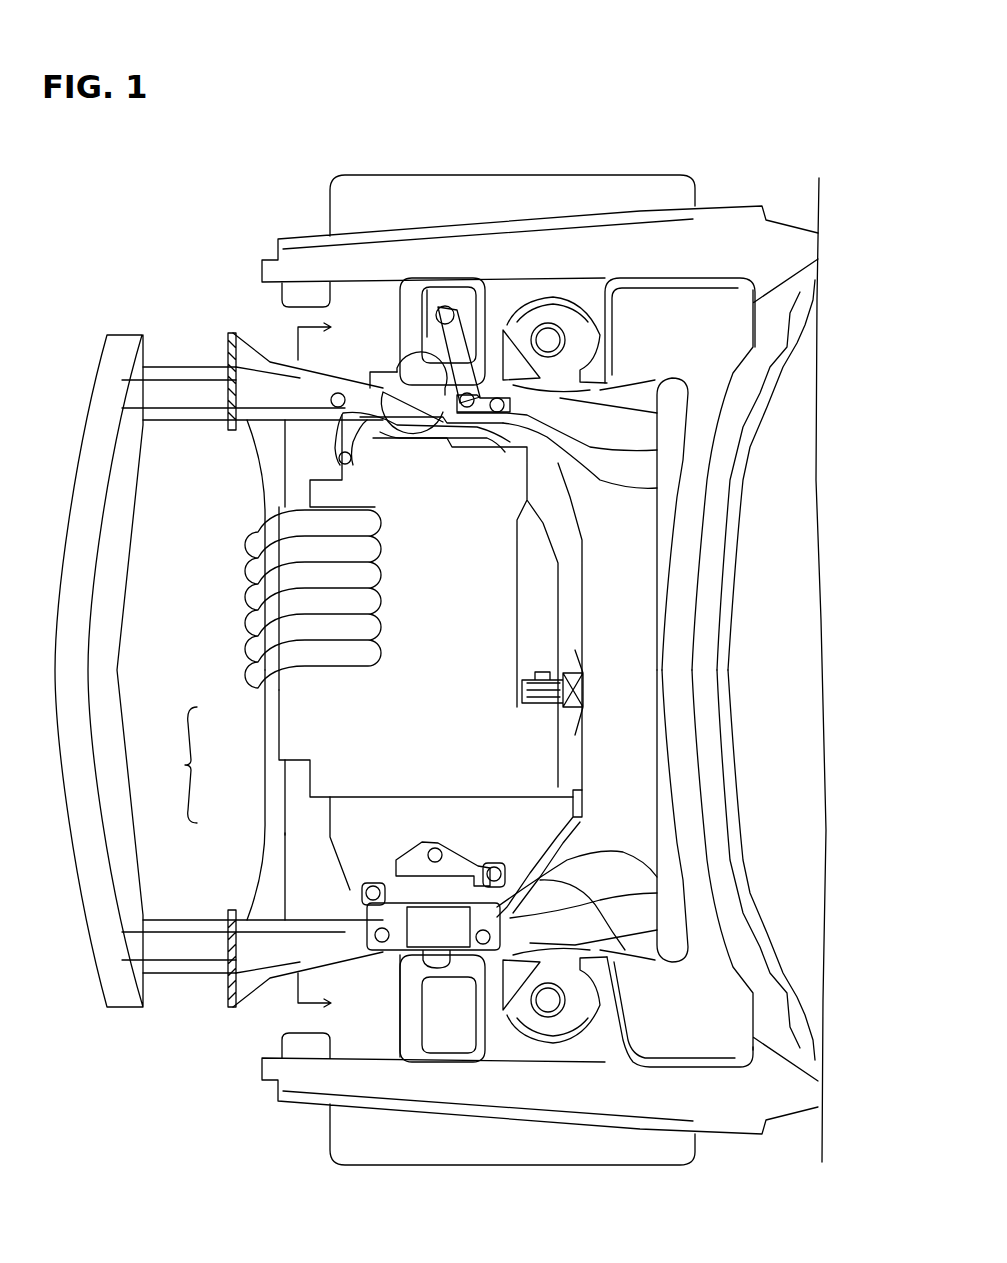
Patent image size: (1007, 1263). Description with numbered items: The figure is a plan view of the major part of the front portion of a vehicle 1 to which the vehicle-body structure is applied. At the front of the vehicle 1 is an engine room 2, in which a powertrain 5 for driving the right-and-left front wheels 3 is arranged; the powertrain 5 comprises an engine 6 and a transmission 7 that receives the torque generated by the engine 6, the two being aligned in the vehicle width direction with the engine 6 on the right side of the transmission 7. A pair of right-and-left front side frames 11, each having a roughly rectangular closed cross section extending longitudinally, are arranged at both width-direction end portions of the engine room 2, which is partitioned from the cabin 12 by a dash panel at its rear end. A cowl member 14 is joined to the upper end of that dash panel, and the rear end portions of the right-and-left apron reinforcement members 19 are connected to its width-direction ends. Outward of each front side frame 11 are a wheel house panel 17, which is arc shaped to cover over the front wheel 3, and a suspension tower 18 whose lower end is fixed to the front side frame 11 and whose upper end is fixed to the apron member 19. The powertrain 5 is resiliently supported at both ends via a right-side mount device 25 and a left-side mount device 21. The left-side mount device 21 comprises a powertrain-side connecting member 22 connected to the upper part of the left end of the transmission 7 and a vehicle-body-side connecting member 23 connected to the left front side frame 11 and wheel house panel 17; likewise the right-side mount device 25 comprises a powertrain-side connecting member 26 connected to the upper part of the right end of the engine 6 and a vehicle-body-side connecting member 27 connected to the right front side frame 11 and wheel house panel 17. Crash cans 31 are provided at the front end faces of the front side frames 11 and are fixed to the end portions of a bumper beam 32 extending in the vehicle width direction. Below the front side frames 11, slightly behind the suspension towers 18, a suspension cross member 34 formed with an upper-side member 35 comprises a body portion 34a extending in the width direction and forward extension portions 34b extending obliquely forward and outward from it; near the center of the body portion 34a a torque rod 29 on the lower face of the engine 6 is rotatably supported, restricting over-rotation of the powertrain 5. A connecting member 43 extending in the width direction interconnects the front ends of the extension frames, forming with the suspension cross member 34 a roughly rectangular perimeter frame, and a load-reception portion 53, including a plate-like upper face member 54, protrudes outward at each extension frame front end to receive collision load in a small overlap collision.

The vehicle 1 is at (297, 150).
The engine room 2 is at (304, 472).
The front wheels 3 is at (527, 173).
The powertrain 5 is at (179, 765).
The engine 6 is at (340, 730).
The transmission 7 is at (337, 843).
The front side frames 11 is at (312, 398).
The cabin 12 is at (792, 637).
The cowl member 14 is at (703, 722).
The wheel house panel 17 is at (450, 290).
The suspension tower 18 is at (550, 305).
The apron reinforcement member 19 is at (545, 300).
The left-side mount device 21 is at (460, 850).
The powertrain-side connecting member 22 is at (427, 887).
The vehicle-body-side connecting member 23 is at (393, 952).
The right-side mount device 25 is at (388, 355).
The powertrain-side connecting member 26 is at (370, 450).
The vehicle-body-side connecting member 27 is at (415, 370).
The torque rod 29 is at (523, 708).
The crash cans 31 is at (180, 390).
The bumper beam 32 is at (84, 440).
The suspension cross member 34 is at (617, 478).
The body portion 34a is at (643, 518).
The forward extension portions 34b is at (600, 417).
The upper-side member 35 is at (633, 803).
The connecting member 43 is at (277, 506).
The load-reception portion 53 is at (230, 333).
The upper face member 54 is at (247, 362).